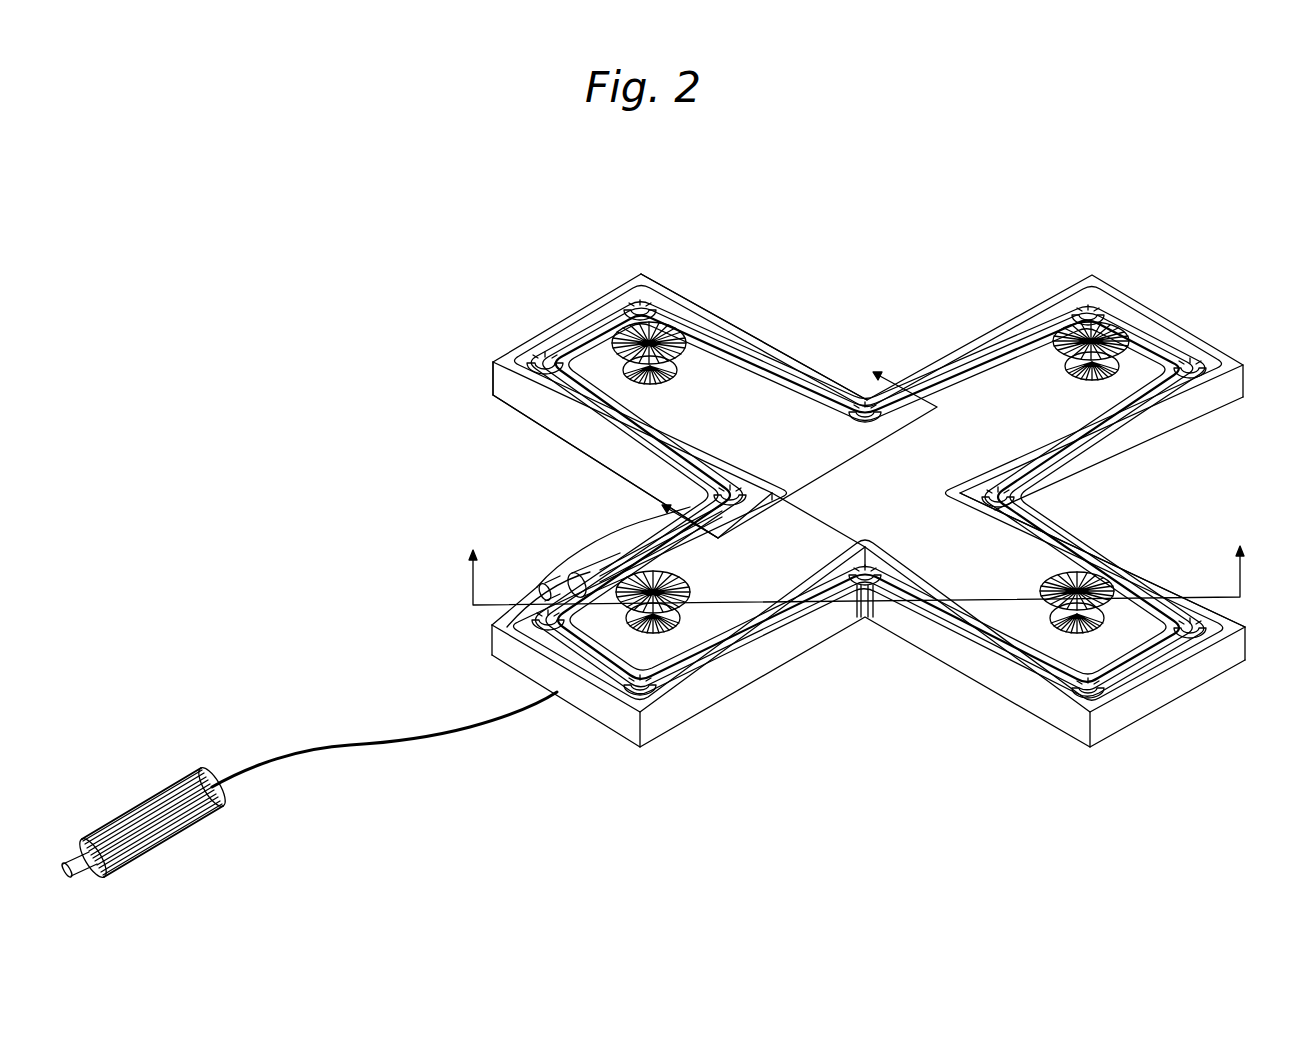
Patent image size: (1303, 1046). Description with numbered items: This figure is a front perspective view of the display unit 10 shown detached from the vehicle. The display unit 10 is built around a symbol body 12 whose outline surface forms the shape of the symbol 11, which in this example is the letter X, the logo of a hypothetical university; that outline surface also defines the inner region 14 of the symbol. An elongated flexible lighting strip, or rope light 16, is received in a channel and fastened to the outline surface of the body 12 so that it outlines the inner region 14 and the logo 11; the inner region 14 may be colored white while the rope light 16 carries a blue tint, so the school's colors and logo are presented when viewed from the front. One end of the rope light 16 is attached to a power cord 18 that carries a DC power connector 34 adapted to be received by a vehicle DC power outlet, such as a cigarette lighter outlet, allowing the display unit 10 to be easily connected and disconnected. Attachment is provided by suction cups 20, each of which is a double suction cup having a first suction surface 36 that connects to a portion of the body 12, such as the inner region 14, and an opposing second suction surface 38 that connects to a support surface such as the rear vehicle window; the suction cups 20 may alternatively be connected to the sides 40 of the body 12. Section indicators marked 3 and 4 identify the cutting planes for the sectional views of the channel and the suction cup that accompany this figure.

The display unit 10 is at (868, 268).
The symbol 11 is at (764, 326).
The symbol body 12 is at (593, 367).
The inner region 14 is at (988, 413).
The elongated flexible lighting strip (rope light) 16 is at (559, 377).
The power cord 18 is at (310, 745).
The suction cup 20 is at (632, 338).
The DC power connector 34 is at (137, 830).
The first suction surface 36 is at (1100, 630).
The second suction surface 38 is at (1078, 590).
The sides 40 is at (532, 410).
The section line 3- 3 is at (781, 444).
The section line 4- 4 is at (855, 560).